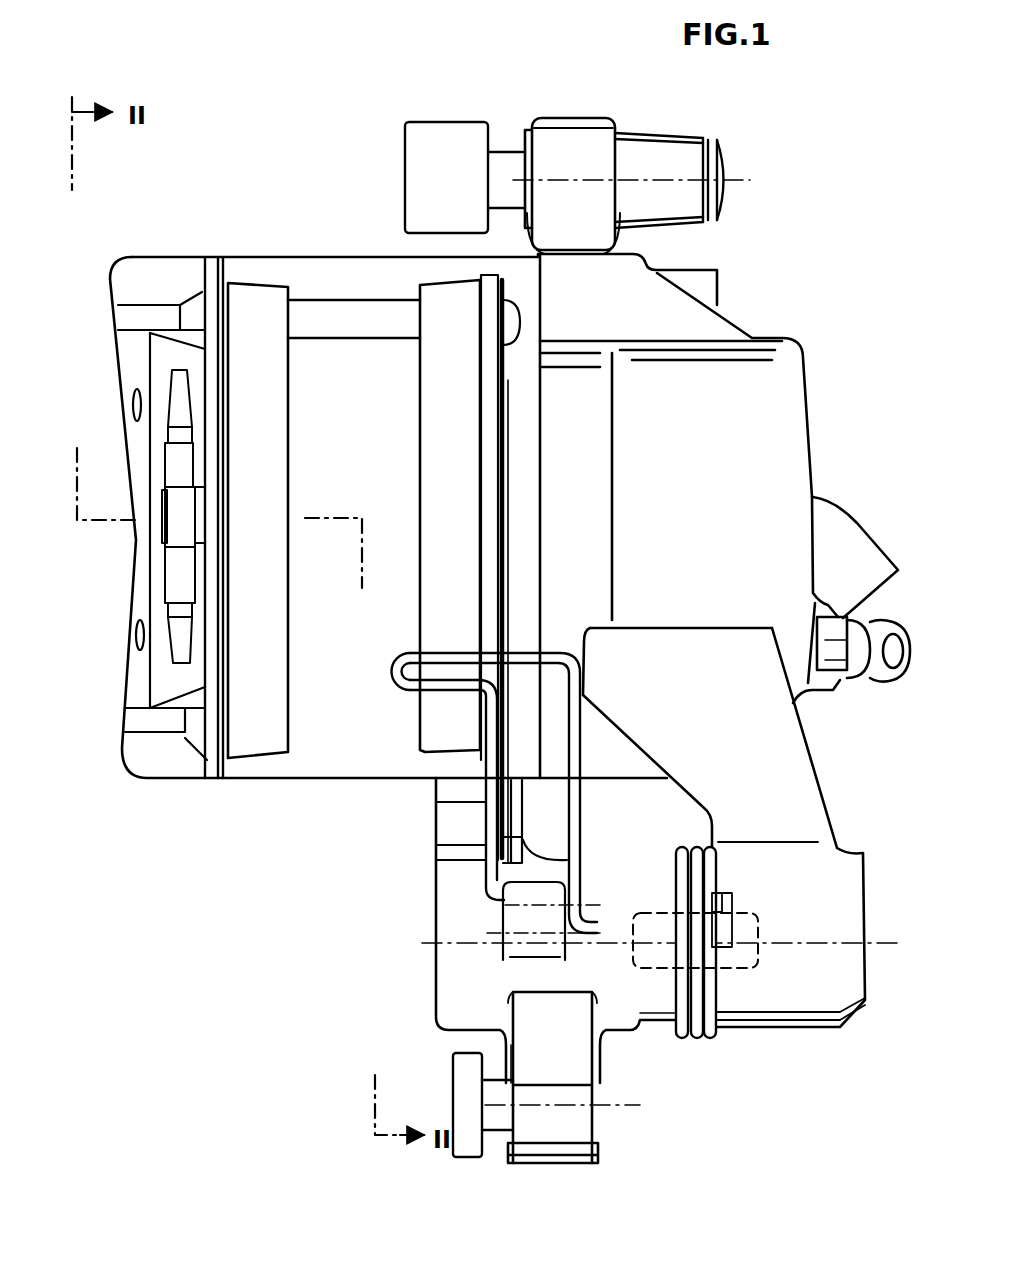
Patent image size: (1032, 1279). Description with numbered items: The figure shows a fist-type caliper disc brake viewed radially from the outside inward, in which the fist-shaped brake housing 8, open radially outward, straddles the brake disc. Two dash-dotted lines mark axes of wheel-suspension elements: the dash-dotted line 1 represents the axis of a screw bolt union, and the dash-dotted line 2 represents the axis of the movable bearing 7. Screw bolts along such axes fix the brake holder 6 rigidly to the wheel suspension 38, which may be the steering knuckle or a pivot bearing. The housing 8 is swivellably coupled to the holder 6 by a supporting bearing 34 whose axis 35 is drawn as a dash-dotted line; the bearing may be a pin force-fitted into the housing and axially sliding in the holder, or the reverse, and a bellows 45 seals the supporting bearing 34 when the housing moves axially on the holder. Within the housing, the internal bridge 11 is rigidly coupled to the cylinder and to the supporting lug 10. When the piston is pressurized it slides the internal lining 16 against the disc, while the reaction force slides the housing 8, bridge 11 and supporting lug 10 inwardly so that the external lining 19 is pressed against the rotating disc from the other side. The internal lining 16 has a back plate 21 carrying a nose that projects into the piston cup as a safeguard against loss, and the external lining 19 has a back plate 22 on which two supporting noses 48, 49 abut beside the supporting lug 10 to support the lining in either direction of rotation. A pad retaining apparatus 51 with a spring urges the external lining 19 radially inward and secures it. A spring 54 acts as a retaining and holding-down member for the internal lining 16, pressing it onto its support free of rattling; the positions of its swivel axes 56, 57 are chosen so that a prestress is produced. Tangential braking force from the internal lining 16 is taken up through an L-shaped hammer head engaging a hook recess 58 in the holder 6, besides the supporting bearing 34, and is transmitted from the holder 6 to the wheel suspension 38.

The dash-dotted line 1 is at (622, 1108).
The dash-dotted line 2 is at (672, 175).
The brake holder 6 is at (431, 1021).
The movable bearing 7 is at (578, 112).
The brake housing 8 is at (313, 788).
The supporting lug 10 is at (132, 534).
The internal bridge 11 is at (348, 360).
The internal brake lining 16 is at (463, 278).
The external brake lining 19 is at (241, 276).
The back plate 21 is at (487, 357).
The back plate 22 is at (212, 277).
The supporting bearing 34 is at (846, 842).
The axis of the supporting bearing 35 is at (805, 947).
The wheel suspension 38 is at (452, 181).
The bellows 45 is at (702, 1040).
The supporting nose 48 is at (192, 312).
The supporting nose 49 is at (197, 736).
The pad retaining apparatus 51 is at (175, 570).
The spring 54 is at (572, 718).
The swivel axis 56 is at (562, 875).
The swivel axis 57 is at (595, 908).
The hook recess 58 is at (452, 820).